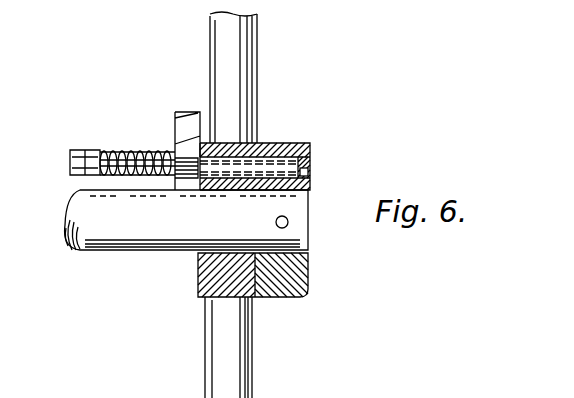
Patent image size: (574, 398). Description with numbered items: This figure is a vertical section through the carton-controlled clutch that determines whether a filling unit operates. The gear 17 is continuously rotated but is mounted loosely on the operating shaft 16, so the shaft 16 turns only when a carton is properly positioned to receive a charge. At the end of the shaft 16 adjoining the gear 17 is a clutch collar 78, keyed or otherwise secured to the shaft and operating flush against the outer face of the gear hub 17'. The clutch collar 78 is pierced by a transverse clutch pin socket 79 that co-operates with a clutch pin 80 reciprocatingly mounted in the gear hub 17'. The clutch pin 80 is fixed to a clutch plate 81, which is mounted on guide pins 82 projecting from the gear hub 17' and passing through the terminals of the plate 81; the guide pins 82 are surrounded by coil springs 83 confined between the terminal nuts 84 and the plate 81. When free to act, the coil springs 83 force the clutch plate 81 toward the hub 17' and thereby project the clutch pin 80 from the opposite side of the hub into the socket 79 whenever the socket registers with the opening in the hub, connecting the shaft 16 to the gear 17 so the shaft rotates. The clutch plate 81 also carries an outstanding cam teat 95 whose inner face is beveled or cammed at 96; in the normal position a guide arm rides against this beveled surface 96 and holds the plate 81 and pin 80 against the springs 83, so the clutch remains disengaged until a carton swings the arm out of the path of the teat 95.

The operating shaft 16 is at (128, 243).
The gear 17 is at (254, 205).
The gear hub 17' is at (171, 292).
The clutch collar 78 is at (292, 273).
The clutch pin socket 79 is at (310, 172).
The clutch pin 80 is at (275, 163).
The clutch plate 81 is at (187, 167).
The guide pins 82 is at (100, 173).
The coil springs 83 is at (108, 150).
The terminal nuts 84 is at (70, 163).
The cam teat 95 is at (175, 112).
The beveled surface 96 is at (202, 127).